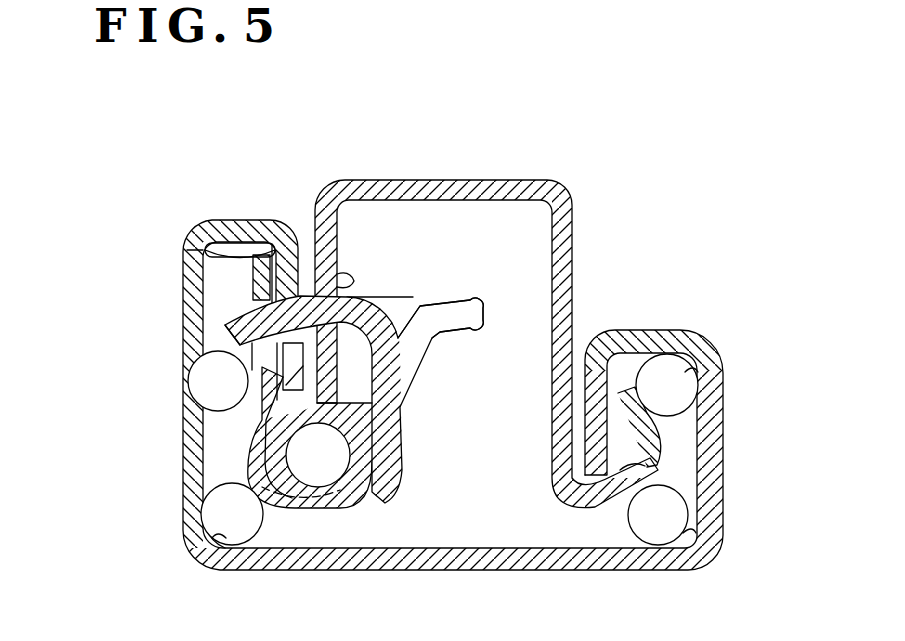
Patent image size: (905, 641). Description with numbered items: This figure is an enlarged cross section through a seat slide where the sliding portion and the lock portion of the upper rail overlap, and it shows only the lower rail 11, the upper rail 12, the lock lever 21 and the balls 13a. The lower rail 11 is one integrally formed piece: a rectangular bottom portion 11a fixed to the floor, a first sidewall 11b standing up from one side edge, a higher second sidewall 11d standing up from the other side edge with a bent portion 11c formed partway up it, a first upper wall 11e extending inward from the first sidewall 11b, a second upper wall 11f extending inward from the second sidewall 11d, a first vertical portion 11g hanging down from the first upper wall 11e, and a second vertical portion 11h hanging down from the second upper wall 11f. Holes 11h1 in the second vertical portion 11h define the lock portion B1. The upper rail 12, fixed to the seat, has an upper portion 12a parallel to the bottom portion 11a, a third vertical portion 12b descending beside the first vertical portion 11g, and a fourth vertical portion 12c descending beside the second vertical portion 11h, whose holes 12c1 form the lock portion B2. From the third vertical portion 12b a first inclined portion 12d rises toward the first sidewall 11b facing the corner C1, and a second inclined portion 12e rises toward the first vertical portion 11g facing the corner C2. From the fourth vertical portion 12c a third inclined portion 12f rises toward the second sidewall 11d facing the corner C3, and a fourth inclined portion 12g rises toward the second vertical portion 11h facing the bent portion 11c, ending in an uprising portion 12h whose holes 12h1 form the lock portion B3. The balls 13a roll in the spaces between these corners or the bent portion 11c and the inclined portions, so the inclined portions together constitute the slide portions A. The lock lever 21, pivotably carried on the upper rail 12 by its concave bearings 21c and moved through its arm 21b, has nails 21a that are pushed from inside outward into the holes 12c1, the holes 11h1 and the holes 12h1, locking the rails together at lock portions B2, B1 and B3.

The lower rail 11 is at (530, 574).
The bottom portion 11a is at (432, 560).
The first sidewall 11b is at (713, 432).
The bent portion 11c is at (188, 357).
The second sidewall 11d is at (190, 312).
The first upper wall 11e is at (643, 343).
The second upper wall 11f is at (231, 222).
The first vertical portion 11g is at (585, 404).
The second vertical portion 11h is at (337, 254).
The holes 11h1 is at (274, 240).
The upper rail 12 is at (557, 181).
The upper portion 12a is at (430, 190).
The third vertical portion 12b is at (567, 217).
The fourth vertical portion 12c is at (340, 232).
The holes 12c1 is at (348, 289).
The first inclined portion 12d is at (640, 465).
The second inclined portion 12e is at (640, 416).
The third inclined portion 12f is at (205, 540).
The fourth inclined portion 12g is at (258, 398).
The uprising portion 12h is at (199, 230).
The holes 12h1 is at (187, 254).
The balls 13a is at (220, 410).
The lock lever 21 is at (410, 475).
The nails 21a is at (228, 324).
The arm 21b is at (458, 320).
The bearings 21c is at (318, 502).
The slide portions A is at (206, 457).
The lock portion B1 is at (272, 343).
The lock portion B2 is at (342, 300).
The lock portion B3 is at (236, 303).
The corner C1 is at (690, 532).
The corner C2 is at (690, 368).
The corner C3 is at (228, 548).